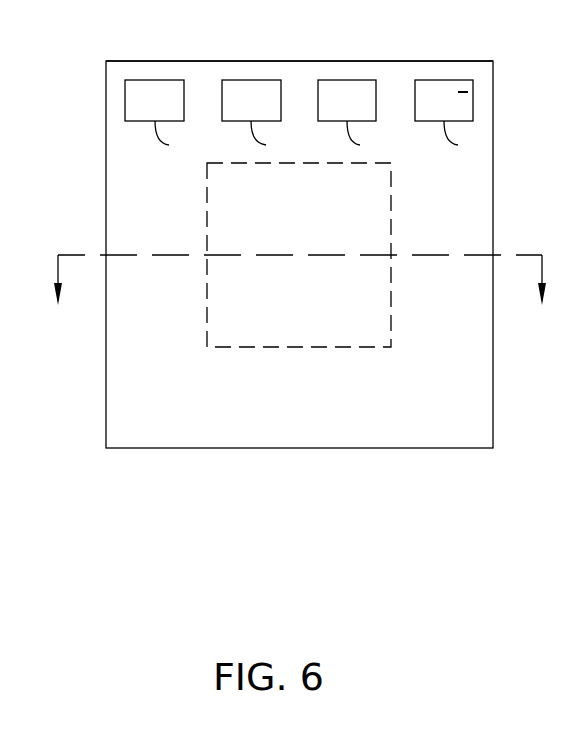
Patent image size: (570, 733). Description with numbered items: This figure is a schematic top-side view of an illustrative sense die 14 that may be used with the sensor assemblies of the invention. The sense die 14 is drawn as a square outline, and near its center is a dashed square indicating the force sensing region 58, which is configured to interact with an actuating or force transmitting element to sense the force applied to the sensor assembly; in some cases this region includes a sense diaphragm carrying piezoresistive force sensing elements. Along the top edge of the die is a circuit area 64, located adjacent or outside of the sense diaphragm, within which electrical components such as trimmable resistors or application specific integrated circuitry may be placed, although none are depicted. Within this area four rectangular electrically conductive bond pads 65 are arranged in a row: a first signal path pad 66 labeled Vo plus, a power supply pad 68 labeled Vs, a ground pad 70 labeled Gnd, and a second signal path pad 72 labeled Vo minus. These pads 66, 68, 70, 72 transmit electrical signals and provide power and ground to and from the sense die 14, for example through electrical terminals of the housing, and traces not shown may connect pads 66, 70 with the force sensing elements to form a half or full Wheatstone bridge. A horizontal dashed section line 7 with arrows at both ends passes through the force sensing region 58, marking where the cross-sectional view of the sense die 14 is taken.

The sense die 14 is at (106, 404).
The circuit area 64 is at (110, 62).
The first signal path pad 66 is at (155, 80).
The power supply pad 68 is at (251, 80).
The ground pad 70 is at (347, 80).
The second signal path pad 72 is at (433, 80).
The bond pads 65 is at (321, 139).
The force sensing region 58 is at (228, 190).
The line 7- 7 is at (300, 294).